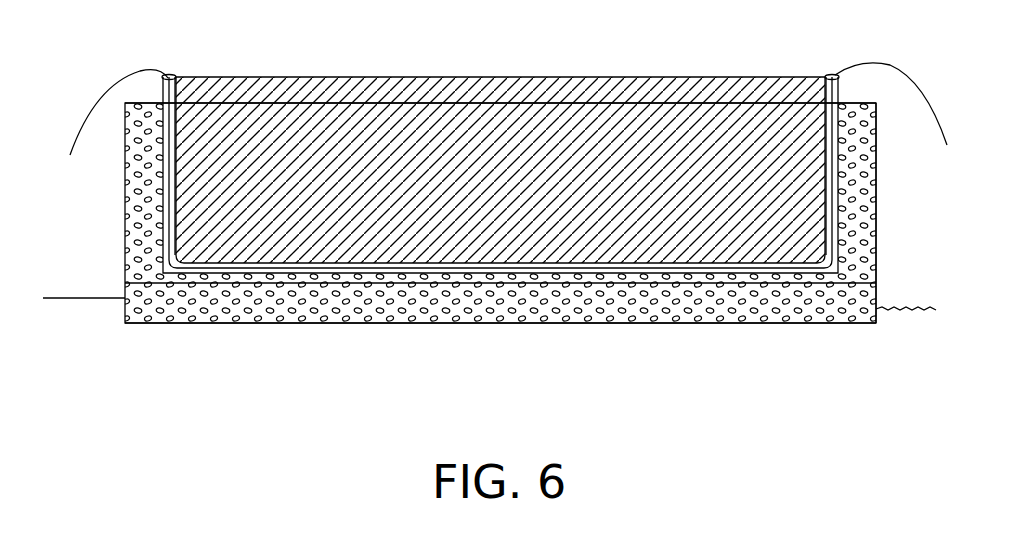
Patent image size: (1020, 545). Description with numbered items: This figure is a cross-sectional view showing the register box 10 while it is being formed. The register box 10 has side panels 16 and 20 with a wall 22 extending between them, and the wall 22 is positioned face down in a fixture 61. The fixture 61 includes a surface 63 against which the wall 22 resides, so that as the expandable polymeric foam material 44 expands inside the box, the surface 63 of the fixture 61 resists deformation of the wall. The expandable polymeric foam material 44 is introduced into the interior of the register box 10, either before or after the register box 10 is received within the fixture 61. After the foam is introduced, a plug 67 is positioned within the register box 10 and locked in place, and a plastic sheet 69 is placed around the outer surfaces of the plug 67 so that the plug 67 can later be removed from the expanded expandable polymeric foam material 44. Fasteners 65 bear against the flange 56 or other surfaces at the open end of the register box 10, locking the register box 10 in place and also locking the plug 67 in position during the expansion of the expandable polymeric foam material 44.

The register box 10 is at (876, 245).
The side panel 16 is at (877, 190).
The side panel 20 is at (125, 183).
The wall 22 is at (455, 323).
The expandable polymeric foam material 44 is at (870, 140).
The flange 56 is at (163, 90).
The fixture 61 is at (906, 312).
The surface 63 is at (718, 323).
The fasteners 65 is at (168, 76).
The plug 67 is at (517, 130).
The plastic sheet 69 is at (92, 110).